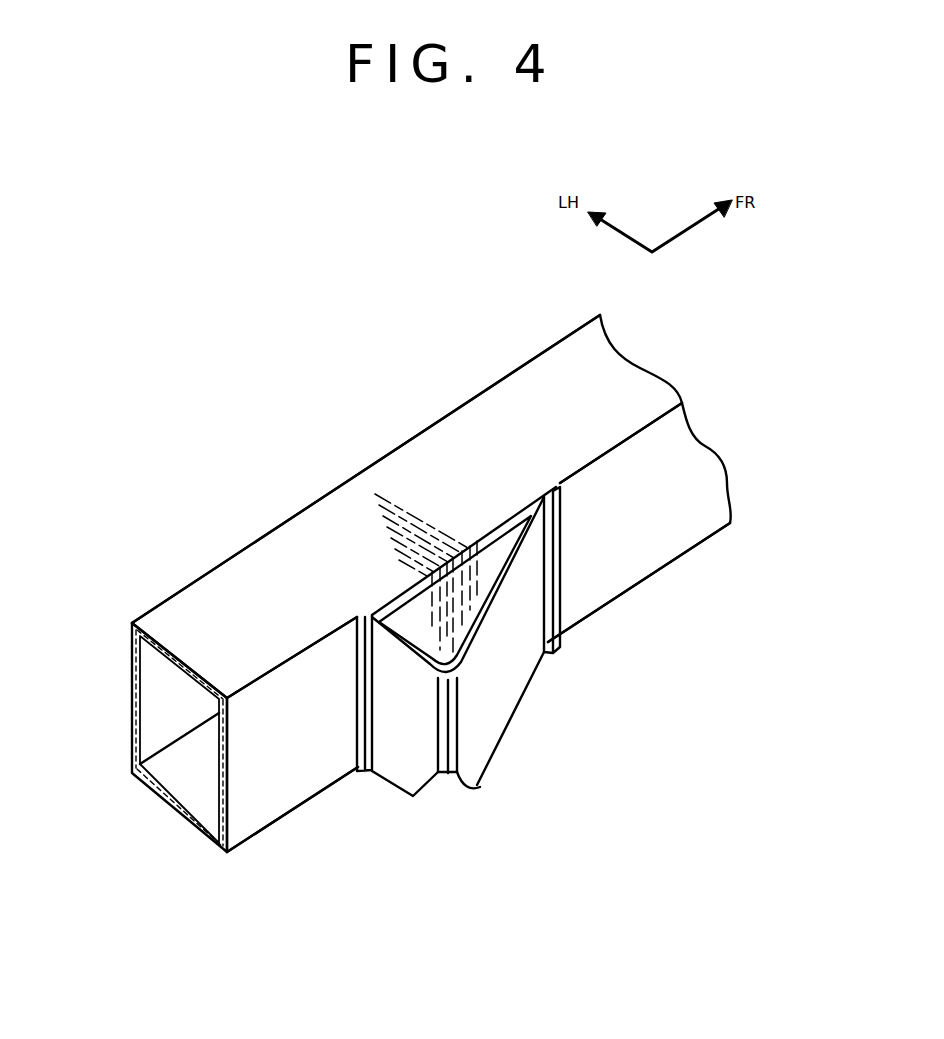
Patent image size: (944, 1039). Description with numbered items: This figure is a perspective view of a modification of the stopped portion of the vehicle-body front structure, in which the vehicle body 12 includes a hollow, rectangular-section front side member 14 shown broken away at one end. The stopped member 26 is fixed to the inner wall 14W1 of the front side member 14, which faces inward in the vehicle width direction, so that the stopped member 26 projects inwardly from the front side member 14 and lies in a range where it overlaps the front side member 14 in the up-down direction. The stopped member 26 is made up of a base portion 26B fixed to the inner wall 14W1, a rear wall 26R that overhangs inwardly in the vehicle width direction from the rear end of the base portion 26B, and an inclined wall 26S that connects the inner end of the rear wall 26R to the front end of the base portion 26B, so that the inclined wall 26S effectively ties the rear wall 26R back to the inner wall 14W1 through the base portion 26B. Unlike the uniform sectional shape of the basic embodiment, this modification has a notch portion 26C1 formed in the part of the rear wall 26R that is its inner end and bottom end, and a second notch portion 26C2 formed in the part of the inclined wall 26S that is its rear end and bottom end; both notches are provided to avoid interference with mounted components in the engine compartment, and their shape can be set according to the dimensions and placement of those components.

The vehicle frame member 12 is at (360, 449).
The front side member 14 is at (520, 397).
The inner wall 14W1 is at (670, 527).
The stopped member 26 is at (525, 711).
The base portion 26B is at (490, 558).
The rear wall 26R is at (397, 757).
The inclined wall 26S is at (507, 693).
The notch portion 26C1 is at (433, 786).
The notch portion 26C2 is at (457, 790).